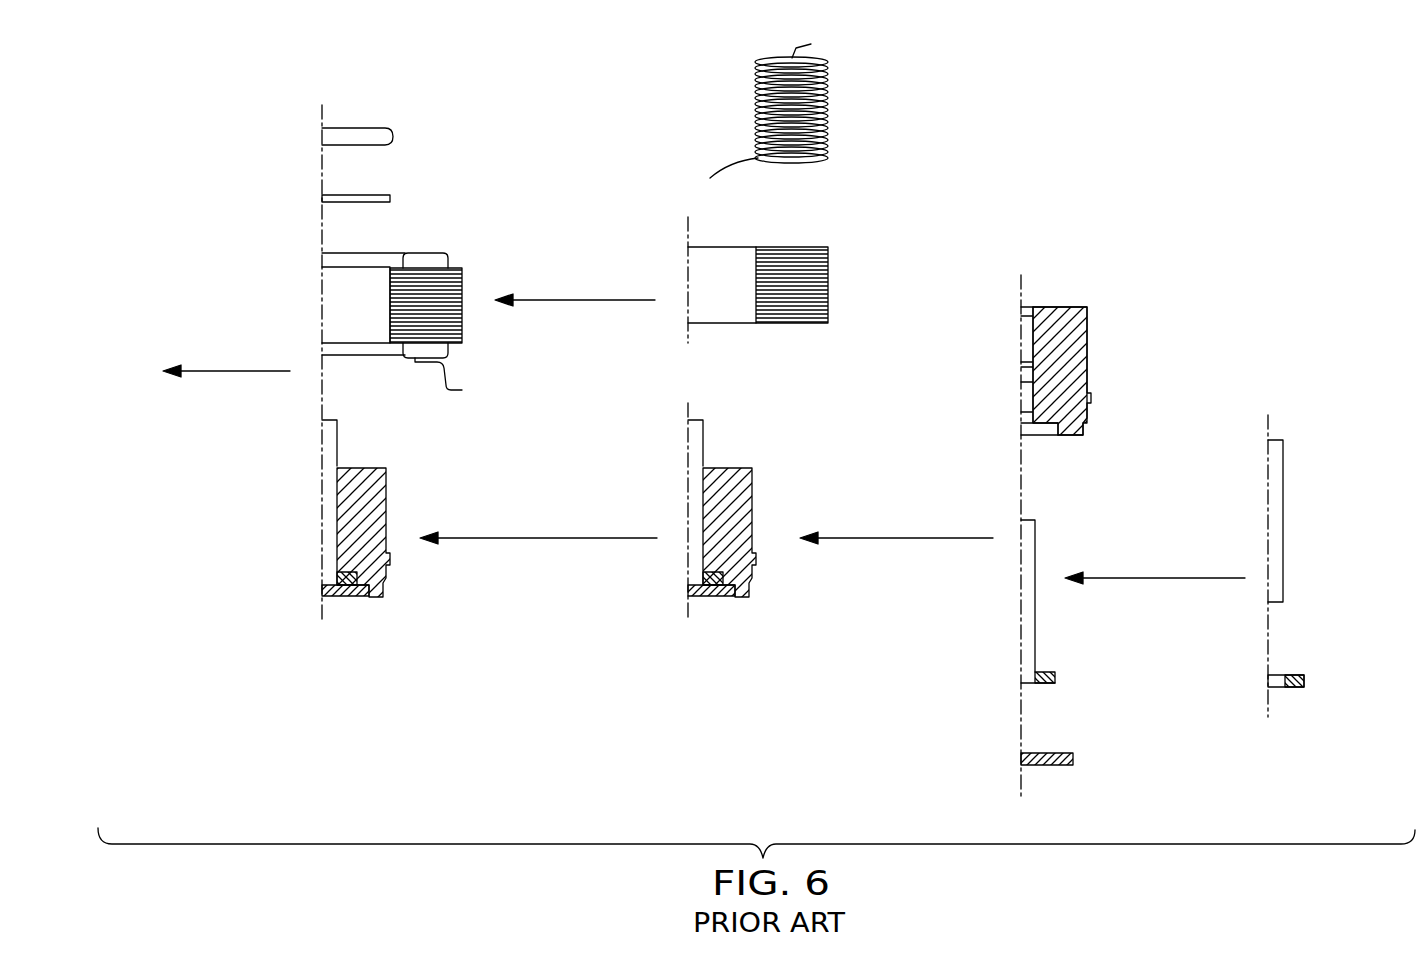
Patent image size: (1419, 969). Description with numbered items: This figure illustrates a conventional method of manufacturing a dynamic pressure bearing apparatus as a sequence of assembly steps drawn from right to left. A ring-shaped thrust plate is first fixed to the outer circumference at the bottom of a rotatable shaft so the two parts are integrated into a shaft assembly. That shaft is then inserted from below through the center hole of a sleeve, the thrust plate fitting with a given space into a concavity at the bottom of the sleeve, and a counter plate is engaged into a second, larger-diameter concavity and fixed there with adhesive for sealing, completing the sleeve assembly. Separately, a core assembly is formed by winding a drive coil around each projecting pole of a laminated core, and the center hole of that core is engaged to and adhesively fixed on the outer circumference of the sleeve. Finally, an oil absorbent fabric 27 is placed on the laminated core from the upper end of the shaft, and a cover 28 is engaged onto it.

The oil absorbent fabric 27 is at (372, 195).
The cover 28 is at (366, 128).